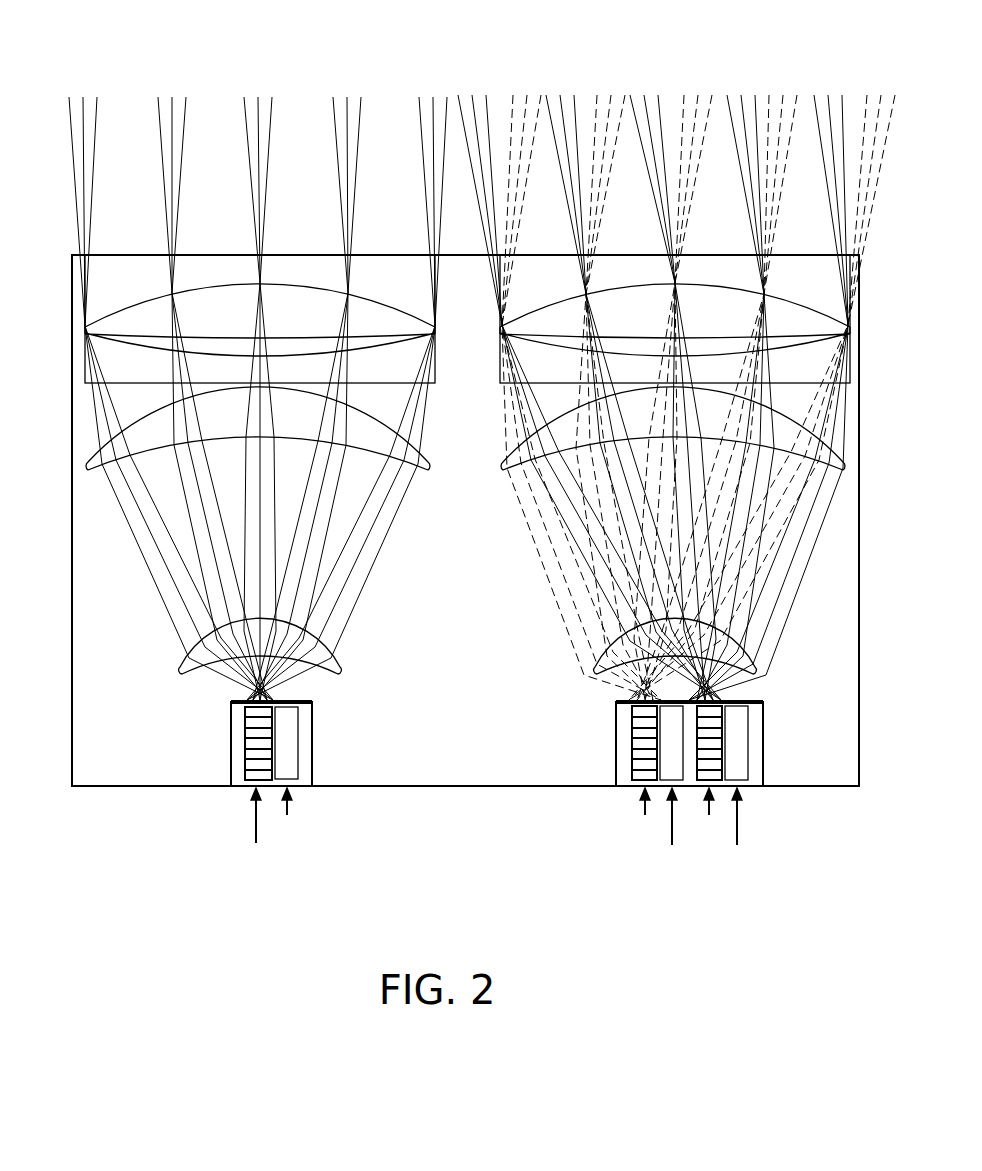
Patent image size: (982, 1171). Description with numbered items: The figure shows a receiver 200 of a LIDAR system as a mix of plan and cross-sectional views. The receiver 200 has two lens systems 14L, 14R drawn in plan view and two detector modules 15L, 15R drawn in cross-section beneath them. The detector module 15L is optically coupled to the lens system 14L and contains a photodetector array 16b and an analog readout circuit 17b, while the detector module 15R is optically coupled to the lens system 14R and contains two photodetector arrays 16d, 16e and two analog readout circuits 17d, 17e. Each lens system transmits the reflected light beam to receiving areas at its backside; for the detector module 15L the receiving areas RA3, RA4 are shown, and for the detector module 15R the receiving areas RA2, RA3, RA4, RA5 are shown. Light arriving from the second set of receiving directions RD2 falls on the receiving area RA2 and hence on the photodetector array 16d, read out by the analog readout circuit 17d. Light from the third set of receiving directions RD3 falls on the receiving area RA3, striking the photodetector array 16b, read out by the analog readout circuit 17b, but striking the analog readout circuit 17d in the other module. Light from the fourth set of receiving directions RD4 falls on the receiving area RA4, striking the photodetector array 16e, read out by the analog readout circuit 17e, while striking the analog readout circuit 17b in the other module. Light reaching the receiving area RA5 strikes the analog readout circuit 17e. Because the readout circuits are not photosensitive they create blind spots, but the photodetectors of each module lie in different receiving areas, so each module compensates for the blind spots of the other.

The receiver 200 is at (72, 742).
The lens system 14L is at (65, 265).
The lens system 14R is at (863, 267).
The third set of receiving directions RD3 is at (100, 93).
The fourth set of receiving directions RD4 is at (828, 80).
The second set of receiving directions RD2 is at (512, 93).
The detector module 15L is at (312, 750).
The detector module 15R is at (616, 760).
The photodetector array 16b is at (248, 720).
The analog readout circuit 17b is at (297, 722).
The photodetector array 16d is at (632, 728).
The analog readout circuit 17d is at (659, 713).
The photodetector array 16e is at (722, 720).
The analog readout circuit 17e is at (748, 747).
The receiving area RA2 is at (644, 815).
The receiving area RA3 is at (464, 830).
The receiving area RA4 is at (497, 815).
The receiving area RA5 is at (736, 830).